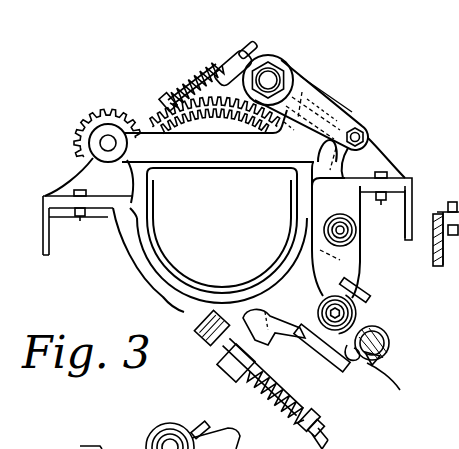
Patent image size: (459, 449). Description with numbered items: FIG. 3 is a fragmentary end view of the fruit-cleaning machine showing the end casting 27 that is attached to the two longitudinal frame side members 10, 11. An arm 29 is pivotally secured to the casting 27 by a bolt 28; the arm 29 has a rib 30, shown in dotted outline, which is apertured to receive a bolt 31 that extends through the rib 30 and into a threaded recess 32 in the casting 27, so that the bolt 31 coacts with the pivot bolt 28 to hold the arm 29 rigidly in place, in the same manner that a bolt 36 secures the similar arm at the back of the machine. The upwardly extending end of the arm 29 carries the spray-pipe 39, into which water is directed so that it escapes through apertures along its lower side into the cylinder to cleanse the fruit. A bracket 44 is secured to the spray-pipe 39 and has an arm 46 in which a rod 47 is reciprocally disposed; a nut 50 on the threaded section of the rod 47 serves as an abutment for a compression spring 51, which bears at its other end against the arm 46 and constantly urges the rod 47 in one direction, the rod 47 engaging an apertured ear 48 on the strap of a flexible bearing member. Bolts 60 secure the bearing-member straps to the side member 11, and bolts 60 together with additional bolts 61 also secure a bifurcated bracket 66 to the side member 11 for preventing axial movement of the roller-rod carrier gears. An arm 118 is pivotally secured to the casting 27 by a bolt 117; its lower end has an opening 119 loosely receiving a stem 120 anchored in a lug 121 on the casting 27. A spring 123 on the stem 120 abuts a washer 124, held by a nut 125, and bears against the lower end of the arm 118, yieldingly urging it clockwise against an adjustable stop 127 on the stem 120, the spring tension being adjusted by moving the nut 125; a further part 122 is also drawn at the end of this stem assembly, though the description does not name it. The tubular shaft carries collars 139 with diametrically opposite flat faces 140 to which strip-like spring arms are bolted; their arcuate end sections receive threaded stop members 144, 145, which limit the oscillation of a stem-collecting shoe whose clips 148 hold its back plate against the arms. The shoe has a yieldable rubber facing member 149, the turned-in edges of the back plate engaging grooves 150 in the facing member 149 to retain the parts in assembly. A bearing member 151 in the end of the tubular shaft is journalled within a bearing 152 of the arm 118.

The longitudinal side member 10 is at (405, 222).
The longitudinal side member 11 is at (44, 257).
The end casting 27 is at (127, 271).
The bolt 28 is at (364, 134).
The arm 29 is at (338, 108).
The rib 30 is at (327, 140).
The bolt 31 is at (320, 97).
The threaded recess 32 is at (286, 134).
The bolt 36 is at (160, 435).
The spray-pipe 39 is at (292, 72).
The bracket 44 is at (281, 62).
The arm 46 is at (226, 60).
The rod 47 is at (247, 46).
The apertured ear 48 is at (166, 99).
The nut 50 is at (192, 92).
The compression spring 51 is at (194, 82).
The bolt 60 is at (446, 244).
The bolt 61 is at (452, 204).
The bracket 66 is at (458, 170).
The bolt 117 is at (341, 222).
The arm 118 is at (305, 327).
The opening 119 is at (232, 372).
The stem 120 is at (322, 432).
The lug 121 is at (200, 322).
The rod end 122 is at (318, 444).
The spring 123 is at (280, 406).
The washer 124 is at (313, 414).
The nut 125 is at (306, 432).
The adjustable stop 127 is at (220, 366).
The collar 139 is at (357, 316).
The flat face 140 is at (372, 291).
The stop member 144 is at (387, 331).
The stop member 145 is at (353, 363).
The clip 148 is at (392, 383).
The facing member 149 is at (390, 347).
The groove 150 is at (378, 360).
The bearing member 151 is at (338, 308).
The bearing 152 is at (331, 332).